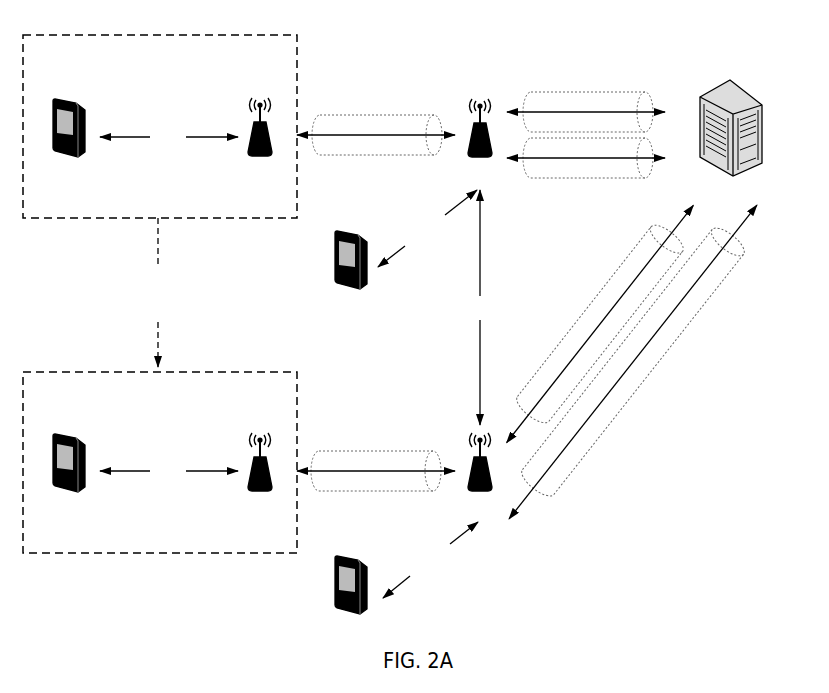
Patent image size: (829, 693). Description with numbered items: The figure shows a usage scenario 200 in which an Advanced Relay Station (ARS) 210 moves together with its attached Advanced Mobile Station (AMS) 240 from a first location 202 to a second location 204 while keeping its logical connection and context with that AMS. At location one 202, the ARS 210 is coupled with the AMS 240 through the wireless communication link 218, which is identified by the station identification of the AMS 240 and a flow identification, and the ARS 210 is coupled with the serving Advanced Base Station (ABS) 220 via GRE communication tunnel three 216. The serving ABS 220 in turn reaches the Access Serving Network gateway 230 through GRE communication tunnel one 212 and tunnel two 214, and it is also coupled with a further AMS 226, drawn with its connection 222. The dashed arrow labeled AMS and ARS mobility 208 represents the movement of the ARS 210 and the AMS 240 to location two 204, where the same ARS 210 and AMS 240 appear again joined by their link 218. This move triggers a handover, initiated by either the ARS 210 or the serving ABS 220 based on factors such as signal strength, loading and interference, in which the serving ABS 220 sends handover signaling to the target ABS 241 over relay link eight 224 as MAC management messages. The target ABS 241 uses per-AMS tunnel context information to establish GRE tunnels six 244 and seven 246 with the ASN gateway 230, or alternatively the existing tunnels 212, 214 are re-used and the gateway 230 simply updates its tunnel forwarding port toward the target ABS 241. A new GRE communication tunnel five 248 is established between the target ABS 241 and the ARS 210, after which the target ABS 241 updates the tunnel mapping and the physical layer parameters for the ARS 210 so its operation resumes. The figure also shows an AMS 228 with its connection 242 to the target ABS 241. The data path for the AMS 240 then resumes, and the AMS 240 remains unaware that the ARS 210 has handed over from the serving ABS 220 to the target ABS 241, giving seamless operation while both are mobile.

The usage scenario 200 is at (54, 661).
The location 1 202 is at (160, 126).
The location 2 204 is at (160, 462).
The AMS and ARS mobility 208 is at (158, 292).
The Advanced Relay Station (ARS) 210 is at (261, 310).
The GRE communication tunnel 1 212 is at (586, 112).
The GRE communication tunnel 2 214 is at (586, 158).
The GRE communication tunnel 3 216 is at (376, 135).
The wireless communication link 218 is at (169, 304).
The serving ABS 220 is at (480, 143).
The wireless link 222 is at (427, 228).
The relay link 8 (R8) 224 is at (480, 307).
The AMS 226 is at (352, 276).
The mobile station 228 is at (352, 600).
The Access Serving Network gateway (ASN GW) 230 is at (731, 142).
The AMS 240 is at (68, 311).
The target ABS 241 is at (466, 517).
The wireless link 242 is at (430, 560).
The tunnel 6 244 is at (600, 324).
The tunnel 7 246 is at (632, 362).
The GRE communication tunnel 5 248 is at (376, 471).